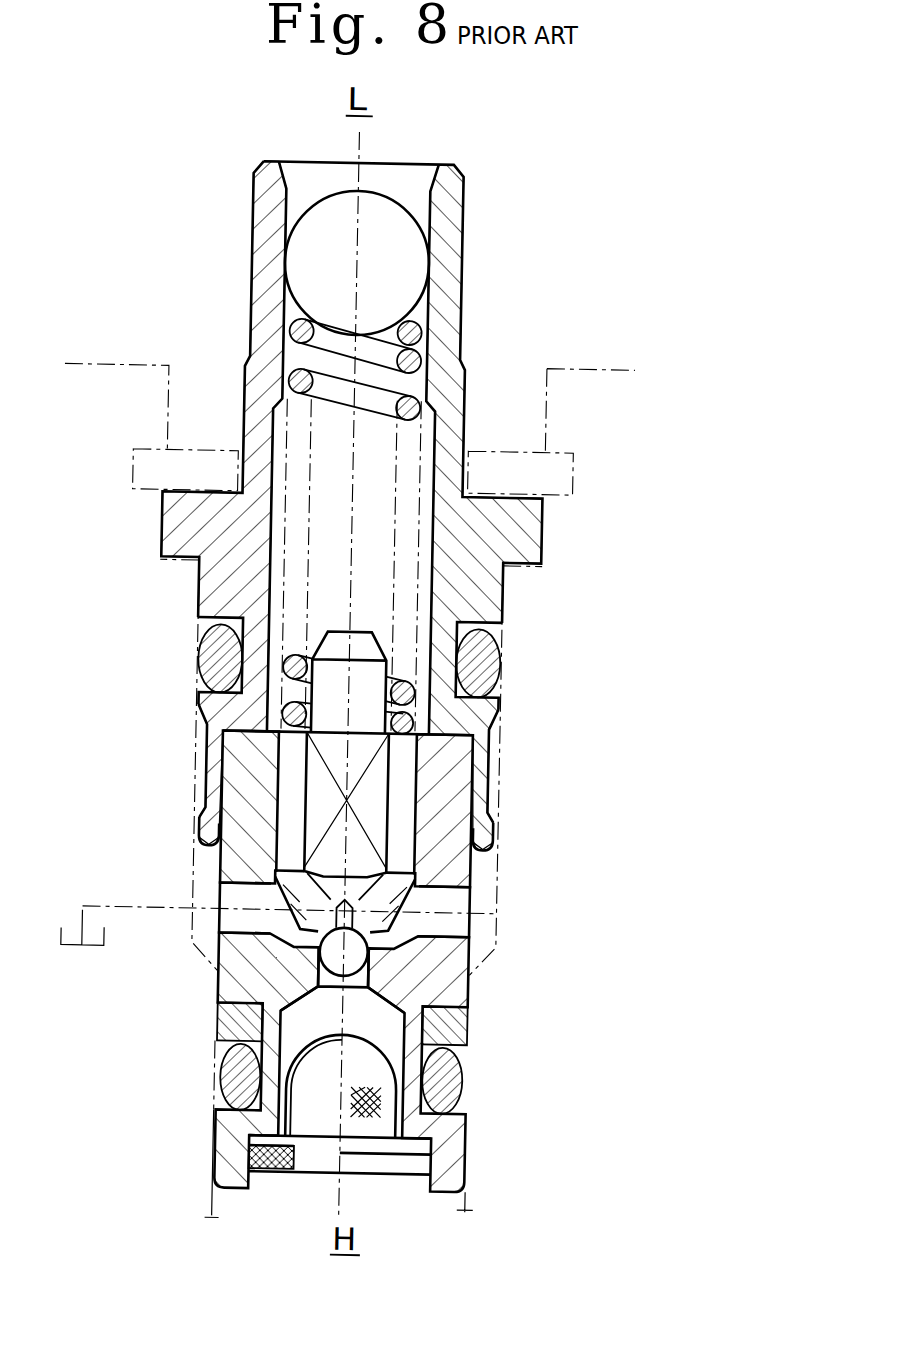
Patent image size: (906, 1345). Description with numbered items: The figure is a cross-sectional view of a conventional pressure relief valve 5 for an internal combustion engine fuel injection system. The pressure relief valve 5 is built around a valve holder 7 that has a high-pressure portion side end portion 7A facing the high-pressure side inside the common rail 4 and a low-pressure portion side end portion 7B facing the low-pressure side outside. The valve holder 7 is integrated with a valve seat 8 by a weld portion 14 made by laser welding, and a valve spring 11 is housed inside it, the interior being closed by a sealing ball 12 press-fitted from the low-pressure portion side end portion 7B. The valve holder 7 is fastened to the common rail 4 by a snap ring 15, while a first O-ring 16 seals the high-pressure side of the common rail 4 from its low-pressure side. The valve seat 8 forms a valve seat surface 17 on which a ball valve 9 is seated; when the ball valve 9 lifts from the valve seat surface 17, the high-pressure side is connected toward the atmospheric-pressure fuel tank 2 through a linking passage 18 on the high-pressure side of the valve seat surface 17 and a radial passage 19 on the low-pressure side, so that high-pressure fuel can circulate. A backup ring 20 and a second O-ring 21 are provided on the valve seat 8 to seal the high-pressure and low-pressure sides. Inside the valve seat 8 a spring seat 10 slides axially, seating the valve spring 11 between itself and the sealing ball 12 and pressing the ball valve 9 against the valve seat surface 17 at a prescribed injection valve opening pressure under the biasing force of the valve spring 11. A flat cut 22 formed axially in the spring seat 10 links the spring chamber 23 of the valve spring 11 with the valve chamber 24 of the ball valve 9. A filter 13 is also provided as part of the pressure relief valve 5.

The pressure relief valve 5 is at (478, 657).
The low-pressure portion side end portion 7B is at (356, 391).
The sealing ball 12 is at (311, 262).
The valve holder 7 is at (352, 504).
The common rail 4 is at (212, 364).
The snap ring 15 is at (546, 472).
The spring chamber 23 is at (351, 565).
The first O-ring 16 is at (373, 657).
The valve spring 11 is at (418, 528).
The high-pressure portion side end portion 7A is at (399, 764).
The flat cut 22 is at (257, 799).
The weld portion 14 is at (310, 818).
The valve seat 8 is at (383, 833).
The valve chamber 24 is at (265, 872).
The spring seat 10 is at (427, 781).
The radial passage 19 is at (338, 901).
The ball valve 9 is at (424, 964).
The valve seat surface 17 is at (300, 1061).
The linking passage 18 is at (275, 990).
The backup ring 20 is at (302, 1040).
The second O-ring 21 is at (300, 1083).
The filter 13 is at (382, 1104).
The fuel tank 2 is at (272, 956).